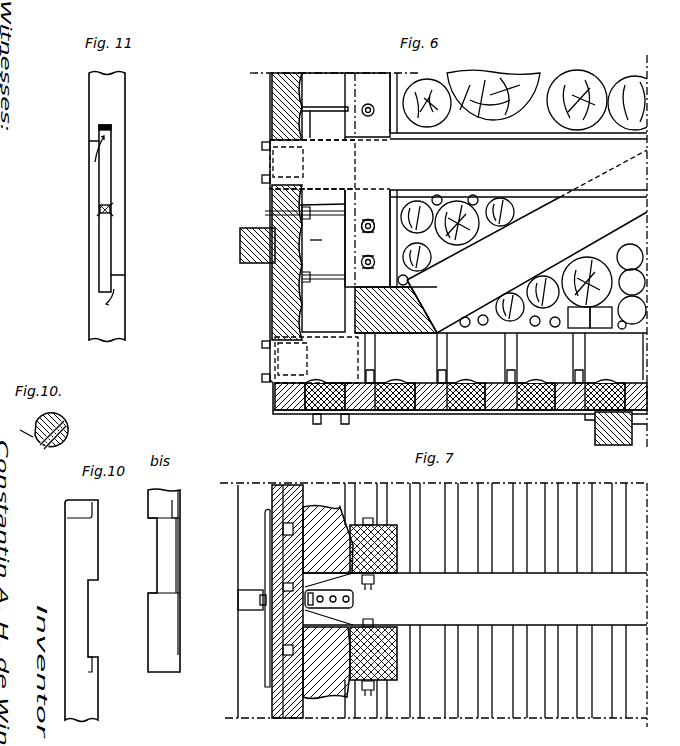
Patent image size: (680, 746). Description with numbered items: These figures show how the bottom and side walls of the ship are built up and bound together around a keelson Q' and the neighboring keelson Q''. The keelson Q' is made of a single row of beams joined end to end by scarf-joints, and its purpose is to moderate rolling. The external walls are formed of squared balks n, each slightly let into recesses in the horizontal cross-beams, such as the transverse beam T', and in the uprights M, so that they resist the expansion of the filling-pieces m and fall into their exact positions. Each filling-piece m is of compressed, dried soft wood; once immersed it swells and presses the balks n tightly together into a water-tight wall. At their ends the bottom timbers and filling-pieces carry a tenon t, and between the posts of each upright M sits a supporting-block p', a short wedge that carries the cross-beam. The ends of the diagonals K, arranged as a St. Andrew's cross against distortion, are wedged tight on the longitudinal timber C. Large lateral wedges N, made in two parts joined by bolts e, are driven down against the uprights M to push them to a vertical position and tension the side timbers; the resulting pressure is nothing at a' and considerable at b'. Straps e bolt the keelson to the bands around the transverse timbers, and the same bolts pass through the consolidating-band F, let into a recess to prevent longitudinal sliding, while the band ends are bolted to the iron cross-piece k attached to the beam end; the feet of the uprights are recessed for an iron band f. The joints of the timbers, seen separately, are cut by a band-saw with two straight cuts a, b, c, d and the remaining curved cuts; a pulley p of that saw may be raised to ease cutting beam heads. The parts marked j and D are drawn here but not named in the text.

In FIG. 11, the squared balk n is at (107, 207).
In FIG. 10, the squared balk n is at (44, 431).
In FIG. 10bis, the squared balk n is at (122, 605).
In FIG. 6, the squared balk n is at (504, 359).
In FIG. 7, the squared balk n is at (288, 601).
In FIG. 11, the straight cut a is at (102, 201).
In FIG. 11, the straight cut b is at (116, 197).
In FIG. 11, the straight cut c is at (95, 215).
In FIG. 7, the straight cut c is at (388, 557).
In FIG. 11, the straight cut d is at (116, 216).
In FIG. 6, the consolidating-band F is at (270, 99).
In FIG. 6, the bolt j is at (258, 259).
In FIG. 6, the iron cross-piece k is at (279, 165).
In FIG. 6, the upright M is at (346, 202).
In FIG. 7, the upright M is at (328, 602).
In FIG. 6, the filling-piece m is at (389, 416).
In FIG. 6, the base plate D is at (458, 326).
In FIG. 6, the transverse beam T' is at (458, 180).
In FIG. 7, the transverse beam T' is at (475, 599).
In FIG. 6, the point of considerable pressure b' is at (391, 233).
In FIG. 7, the point of considerable pressure b' is at (329, 593).
In FIG. 6, the strap / bolt e is at (373, 219).
In FIG. 7, the strap / bolt e is at (384, 647).
In FIG. 6, the large lateral wedge N is at (374, 235).
In FIG. 6, the point of no pressure a' is at (375, 269).
In FIG. 6, the support block Q'' is at (251, 237).
In FIG. 6, the longitudinal timber C is at (400, 310).
In FIG. 6, the diagonal K is at (527, 241).
In FIG. 6, the supporting-block p' is at (316, 380).
In FIG. 6, the tenon t is at (588, 418).
In FIG. 6, the keelson Q' is at (622, 428).
In FIG. 7, the keelson Q' is at (273, 601).
In FIG. 7, the pulley p is at (329, 598).
In FIG. 7, the iron band f is at (256, 602).